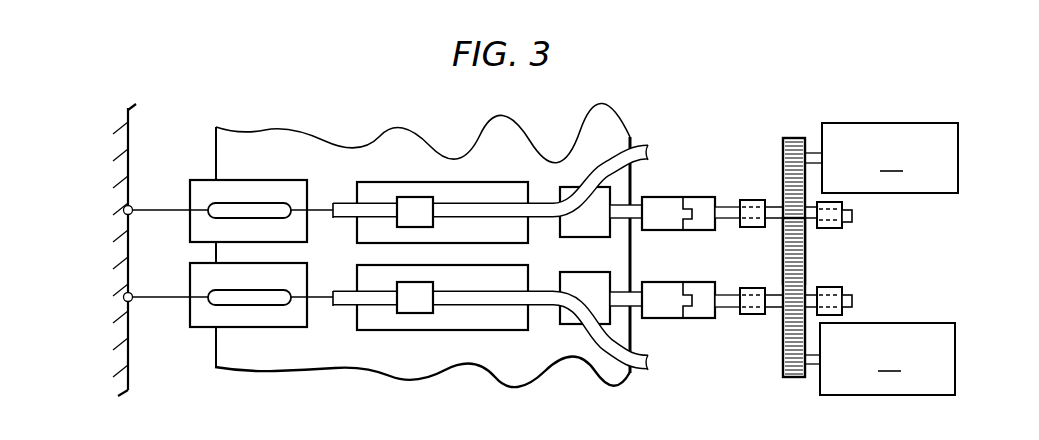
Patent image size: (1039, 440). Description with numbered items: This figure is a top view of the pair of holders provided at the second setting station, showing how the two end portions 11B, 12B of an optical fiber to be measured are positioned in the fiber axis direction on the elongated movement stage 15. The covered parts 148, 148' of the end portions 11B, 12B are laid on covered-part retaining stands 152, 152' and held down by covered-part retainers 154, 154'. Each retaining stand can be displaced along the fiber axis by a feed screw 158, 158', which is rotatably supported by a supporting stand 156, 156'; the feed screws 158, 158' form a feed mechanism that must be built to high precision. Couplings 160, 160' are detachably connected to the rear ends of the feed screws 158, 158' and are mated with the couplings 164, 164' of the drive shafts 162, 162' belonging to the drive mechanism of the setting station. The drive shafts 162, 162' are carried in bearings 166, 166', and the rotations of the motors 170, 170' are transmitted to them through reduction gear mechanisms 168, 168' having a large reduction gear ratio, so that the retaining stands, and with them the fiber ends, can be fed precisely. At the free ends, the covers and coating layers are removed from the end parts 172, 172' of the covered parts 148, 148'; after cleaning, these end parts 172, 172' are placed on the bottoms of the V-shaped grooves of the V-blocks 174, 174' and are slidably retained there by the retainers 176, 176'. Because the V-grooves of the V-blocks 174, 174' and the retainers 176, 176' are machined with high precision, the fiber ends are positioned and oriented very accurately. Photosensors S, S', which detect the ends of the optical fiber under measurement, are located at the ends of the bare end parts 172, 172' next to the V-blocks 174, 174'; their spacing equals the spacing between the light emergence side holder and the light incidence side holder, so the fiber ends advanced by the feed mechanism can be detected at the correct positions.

The movement stage 15 is at (220, 362).
The photosensor S is at (107, 299).
The photosensor S' is at (108, 211).
The end part 172 is at (161, 279).
The end part 172' is at (161, 190).
The V-block 174 is at (235, 317).
The V-block 174' is at (235, 190).
The retainer 176 is at (249, 326).
The retainer 176' is at (249, 182).
The covered-part retaining stand 152 is at (436, 313).
The covered-part retaining stand 152' is at (442, 199).
The covered-part retainer 154 is at (416, 322).
The covered-part retainer 154' is at (419, 192).
The covered part 148 is at (443, 326).
The covered part 148' is at (443, 186).
The supporting stand 156 is at (585, 282).
The supporting stand 156' is at (569, 224).
The feed screw 158 is at (647, 339).
The feed screw 158' is at (648, 178).
The coupling 160 is at (678, 319).
The coupling 160' is at (678, 197).
The coupling 164 is at (708, 324).
The coupling 164' is at (713, 175).
The drive shaft 162 is at (745, 285).
The drive shaft 162' is at (734, 232).
The bearing 166 is at (818, 321).
The bearing 166' is at (819, 198).
The reduction gear mechanism 168 is at (819, 297).
The reduction gear mechanism 168' is at (821, 211).
The motor 170 is at (891, 339).
The motor 170' is at (893, 176).
The end portion 11B is at (580, 350).
The end portion 12B is at (589, 160).